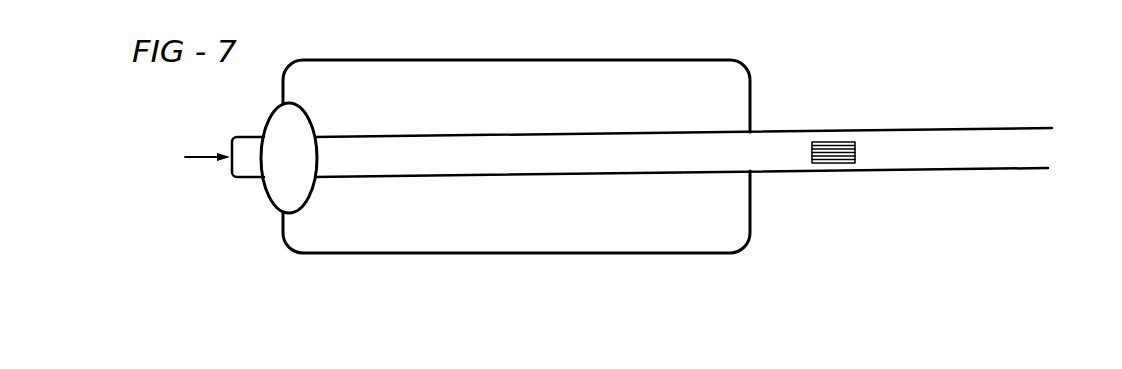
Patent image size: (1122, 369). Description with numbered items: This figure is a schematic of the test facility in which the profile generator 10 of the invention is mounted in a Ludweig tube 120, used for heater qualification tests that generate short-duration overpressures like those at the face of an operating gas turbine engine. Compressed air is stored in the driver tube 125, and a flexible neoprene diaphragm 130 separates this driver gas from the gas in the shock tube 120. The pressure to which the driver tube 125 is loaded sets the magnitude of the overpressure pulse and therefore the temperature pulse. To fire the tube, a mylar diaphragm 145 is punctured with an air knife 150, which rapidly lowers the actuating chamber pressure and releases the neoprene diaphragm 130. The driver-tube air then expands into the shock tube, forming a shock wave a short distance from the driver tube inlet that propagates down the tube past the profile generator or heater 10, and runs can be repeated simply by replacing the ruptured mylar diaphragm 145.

The profile generator 10 is at (840, 164).
The Ludweig tube 120 is at (765, 140).
The driver tube 125 is at (428, 233).
The flexible neoprene diaphragm 130 is at (312, 118).
The mylar diaphragm 145 is at (229, 146).
The air knife 150 is at (175, 167).